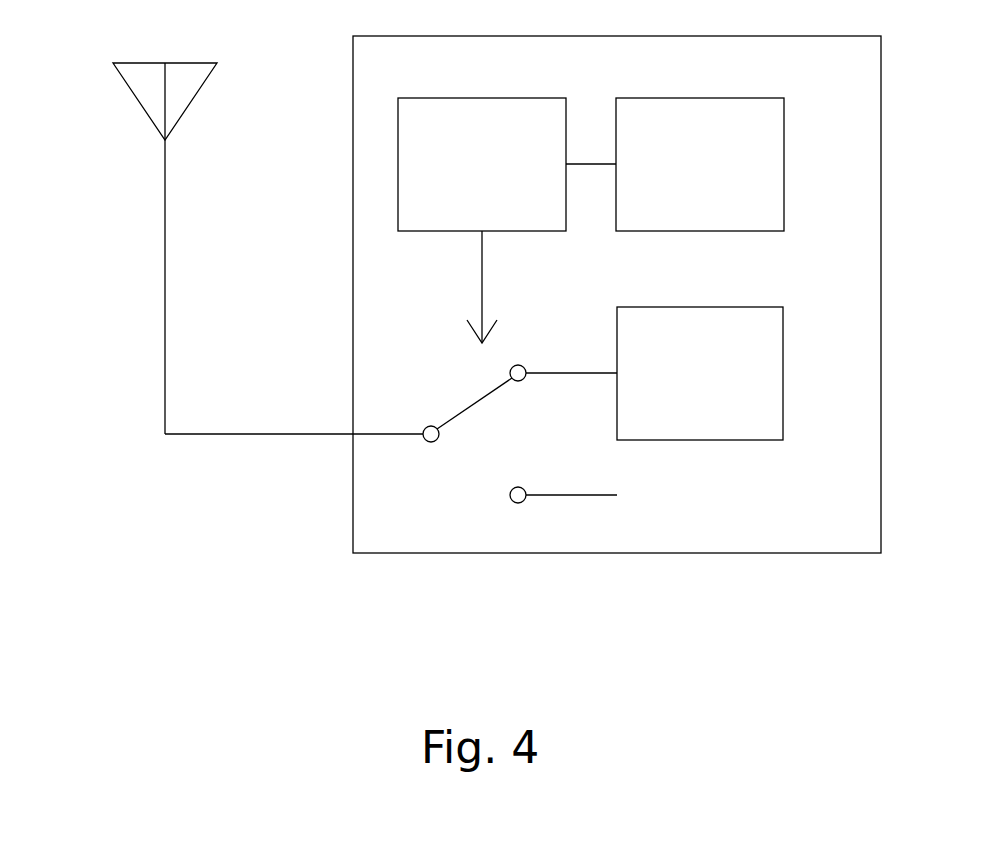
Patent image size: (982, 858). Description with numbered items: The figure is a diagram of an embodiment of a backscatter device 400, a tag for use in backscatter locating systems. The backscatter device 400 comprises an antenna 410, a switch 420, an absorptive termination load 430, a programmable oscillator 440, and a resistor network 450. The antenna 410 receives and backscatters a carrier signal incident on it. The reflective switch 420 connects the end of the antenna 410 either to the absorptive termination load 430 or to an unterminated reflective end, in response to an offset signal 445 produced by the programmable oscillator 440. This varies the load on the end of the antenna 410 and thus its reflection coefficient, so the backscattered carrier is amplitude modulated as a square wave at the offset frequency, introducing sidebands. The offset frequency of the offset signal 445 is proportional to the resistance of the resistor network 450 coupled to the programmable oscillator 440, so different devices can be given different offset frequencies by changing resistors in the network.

The backscatter device 400 is at (832, 553).
The antenna 410 is at (165, 297).
The switch 420 is at (426, 441).
The absorptive termination load 430 is at (676, 383).
The programmable oscillator 440 is at (458, 173).
The offset signal 445 is at (482, 293).
The resistor network 450 is at (676, 173).